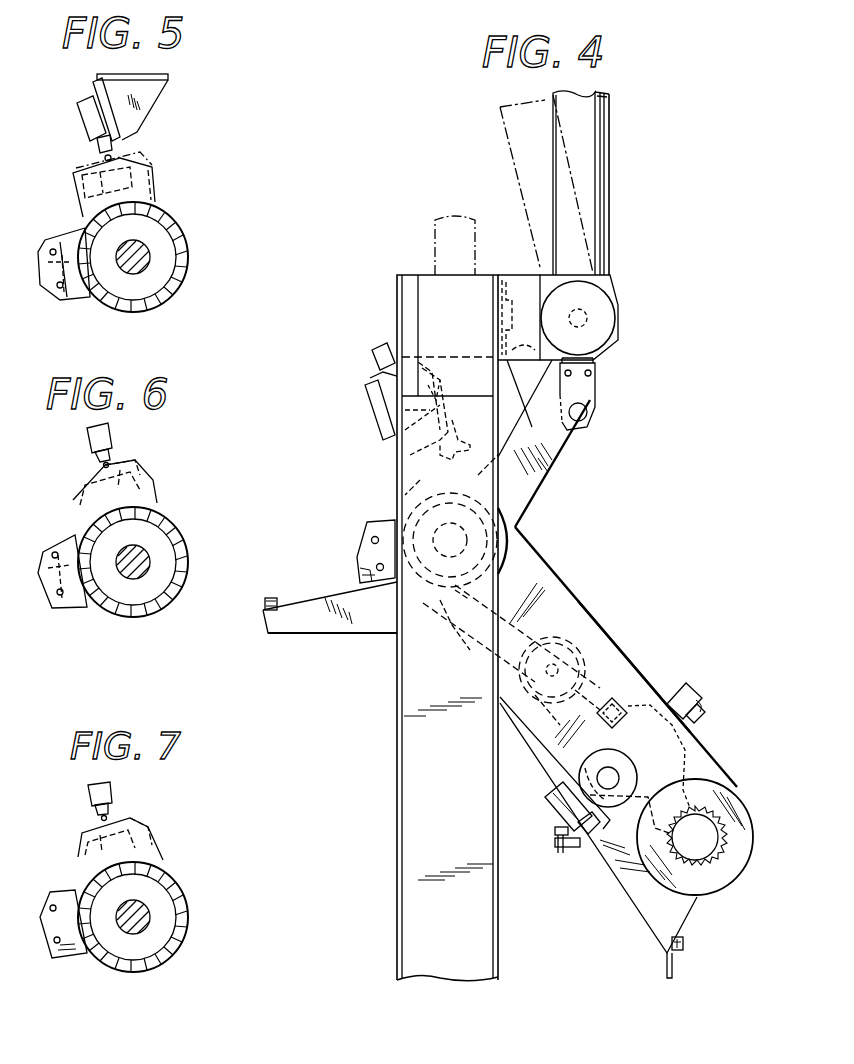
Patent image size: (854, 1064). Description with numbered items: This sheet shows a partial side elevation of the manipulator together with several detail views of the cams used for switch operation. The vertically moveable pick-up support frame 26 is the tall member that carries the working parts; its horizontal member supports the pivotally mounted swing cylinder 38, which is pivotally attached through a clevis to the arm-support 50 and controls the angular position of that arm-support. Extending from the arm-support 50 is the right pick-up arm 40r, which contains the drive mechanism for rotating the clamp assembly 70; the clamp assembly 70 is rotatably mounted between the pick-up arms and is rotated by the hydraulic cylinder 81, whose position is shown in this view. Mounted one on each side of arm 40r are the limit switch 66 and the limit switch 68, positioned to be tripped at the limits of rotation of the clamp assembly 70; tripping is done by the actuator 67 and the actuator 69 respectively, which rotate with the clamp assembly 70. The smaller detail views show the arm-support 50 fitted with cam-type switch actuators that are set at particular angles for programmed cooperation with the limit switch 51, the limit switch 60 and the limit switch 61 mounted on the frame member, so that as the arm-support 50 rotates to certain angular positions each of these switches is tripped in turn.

In FIG. 4, the pick-up support frame 26 is at (410, 770).
In FIG. 4, the swing cylinder 38 is at (608, 176).
In FIG. 4, the arm 40r is at (568, 583).
In FIG. 5, the arm-support 50 is at (150, 291).
In FIG. 6, the arm-support 50 is at (172, 563).
In FIG. 7, the arm-support 50 is at (172, 913).
In FIG. 4, the arm-support 50 is at (530, 528).
In FIG. 5, the limit switch 51 is at (80, 116).
In FIG. 6, the limit switch 60 is at (88, 434).
In FIG. 7, the limit switch 61 is at (88, 794).
In FIG. 4, the limit switch 66 is at (562, 828).
In FIG. 4, the actuator 67 is at (566, 850).
In FIG. 4, the limit switch 68 is at (693, 690).
In FIG. 4, the actuator 69 is at (672, 968).
In FIG. 4, the clamp assembly 70 is at (698, 905).
In FIG. 4, the hydraulic cylinder 81 is at (559, 663).